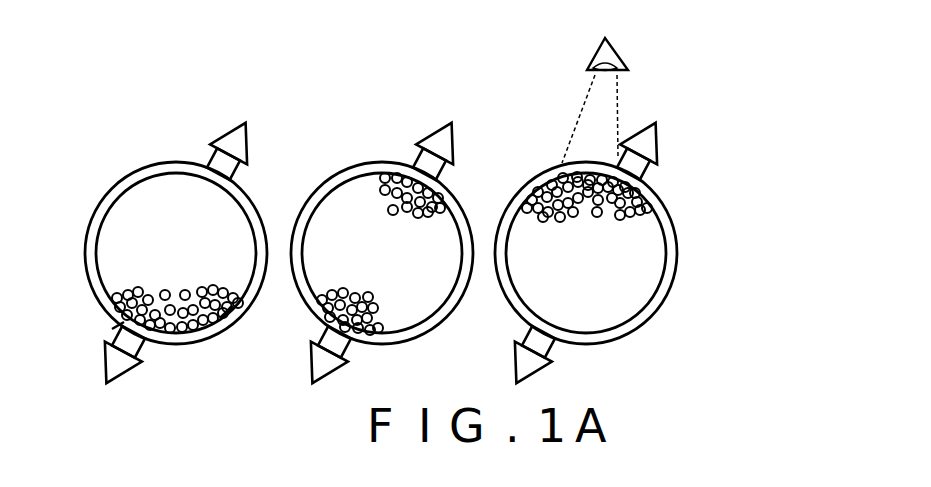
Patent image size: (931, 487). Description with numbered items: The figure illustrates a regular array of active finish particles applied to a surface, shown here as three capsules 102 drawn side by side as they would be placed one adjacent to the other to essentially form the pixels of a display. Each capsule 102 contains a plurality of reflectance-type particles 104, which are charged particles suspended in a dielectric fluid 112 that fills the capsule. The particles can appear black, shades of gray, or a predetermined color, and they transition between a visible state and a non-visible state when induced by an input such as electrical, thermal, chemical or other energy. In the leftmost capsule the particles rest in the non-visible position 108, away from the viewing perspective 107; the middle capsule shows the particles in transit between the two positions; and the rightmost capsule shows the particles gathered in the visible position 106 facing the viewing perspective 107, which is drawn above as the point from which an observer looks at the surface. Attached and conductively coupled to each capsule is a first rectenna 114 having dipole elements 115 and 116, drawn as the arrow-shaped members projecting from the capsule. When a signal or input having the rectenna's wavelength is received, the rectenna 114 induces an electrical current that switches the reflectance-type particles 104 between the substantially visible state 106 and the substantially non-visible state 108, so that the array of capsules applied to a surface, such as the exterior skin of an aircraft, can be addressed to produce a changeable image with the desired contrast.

The capsule 102 is at (257, 207).
The reflectance-type particles 104 is at (155, 287).
The visible position (substantially visible state) 106 is at (672, 190).
The viewing perspective 107 is at (615, 53).
The non-visible position (substantially non-visible state) 108 is at (254, 311).
The dielectric fluid 112 is at (197, 245).
The first rectenna 114 is at (125, 373).
The dipole element 115 is at (145, 346).
The dipole element 116 is at (110, 327).